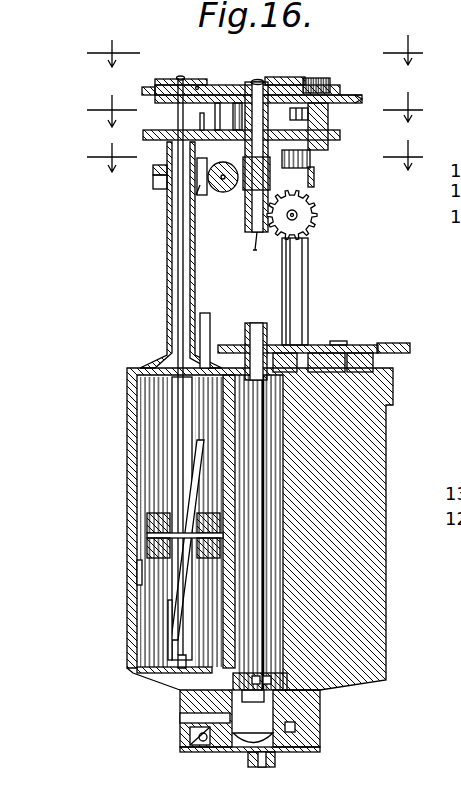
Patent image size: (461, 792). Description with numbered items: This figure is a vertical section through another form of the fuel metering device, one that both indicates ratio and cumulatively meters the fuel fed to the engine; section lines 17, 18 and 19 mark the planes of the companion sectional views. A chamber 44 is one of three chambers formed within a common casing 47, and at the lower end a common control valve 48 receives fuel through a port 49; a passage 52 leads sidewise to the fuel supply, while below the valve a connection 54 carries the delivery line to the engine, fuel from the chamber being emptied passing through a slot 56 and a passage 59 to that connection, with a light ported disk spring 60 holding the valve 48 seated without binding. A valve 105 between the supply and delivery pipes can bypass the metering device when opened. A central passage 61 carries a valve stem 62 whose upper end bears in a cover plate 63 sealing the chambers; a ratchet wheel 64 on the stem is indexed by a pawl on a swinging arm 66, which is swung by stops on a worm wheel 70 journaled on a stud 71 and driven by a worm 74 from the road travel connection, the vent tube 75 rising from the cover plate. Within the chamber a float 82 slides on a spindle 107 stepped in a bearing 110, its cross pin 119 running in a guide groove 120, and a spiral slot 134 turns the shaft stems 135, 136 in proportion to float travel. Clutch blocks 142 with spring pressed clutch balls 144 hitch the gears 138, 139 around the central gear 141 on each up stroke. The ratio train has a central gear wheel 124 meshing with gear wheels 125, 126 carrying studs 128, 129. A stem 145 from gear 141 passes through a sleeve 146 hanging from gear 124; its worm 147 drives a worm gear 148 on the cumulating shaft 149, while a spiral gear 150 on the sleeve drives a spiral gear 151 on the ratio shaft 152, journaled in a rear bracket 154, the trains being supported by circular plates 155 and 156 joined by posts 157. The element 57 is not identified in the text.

The section line 17- 17 is at (256, 51).
The section line 18- 18 is at (256, 109).
The section line 19- 19 is at (256, 156).
The chamber 44 is at (155, 605).
The casing 47 is at (388, 470).
The control valve 48 is at (277, 757).
The port 49 is at (223, 690).
The passage 52 is at (210, 723).
The fuel delivery line connection 54 is at (247, 758).
The slot 56 is at (227, 707).
The pin 57 is at (290, 727).
The passage 59 is at (267, 703).
The disk spring 60 is at (297, 752).
The passage 61 is at (273, 553).
The valve stem 62 is at (257, 515).
The cover plate 63 is at (207, 365).
The ratchet wheel 64 is at (230, 343).
The arm 66 is at (290, 345).
The worm wheel 70 is at (388, 343).
The stud 71 is at (358, 343).
The worm 74 is at (168, 285).
The vent tube 75 is at (305, 278).
The float 82 is at (140, 553).
The valve 105 is at (203, 737).
The spindle 107 is at (172, 628).
The step bearing 110 is at (180, 683).
The cross pin 119 is at (145, 530).
The guide groove 120 is at (140, 580).
The central gear wheel 124 is at (250, 60).
The gear wheel 125 is at (143, 135).
The gear wheel 126 is at (330, 136).
The stud 128 is at (200, 117).
The stud 129 is at (352, 97).
The slot 134 is at (183, 470).
The shaft stem 135 is at (180, 76).
The shaft stem 136 is at (295, 77).
The gear 138 is at (148, 88).
The gear 139 is at (315, 80).
The central gear 141 is at (240, 87).
The clutch block 142 is at (170, 80).
The clutch ball 144 is at (193, 88).
The stem 145 is at (255, 245).
The sleeve 146 is at (310, 165).
The worm 147 is at (248, 222).
The worm gear 148 is at (312, 228).
The shaft 149 is at (300, 214).
The spiral gear 150 is at (313, 185).
The spiral gear 151 is at (225, 192).
The shaft 152 is at (200, 183).
The rear bracket 154 is at (153, 185).
The circular plate 155 is at (157, 177).
The circular plate 156 is at (358, 99).
The post 157 is at (330, 115).